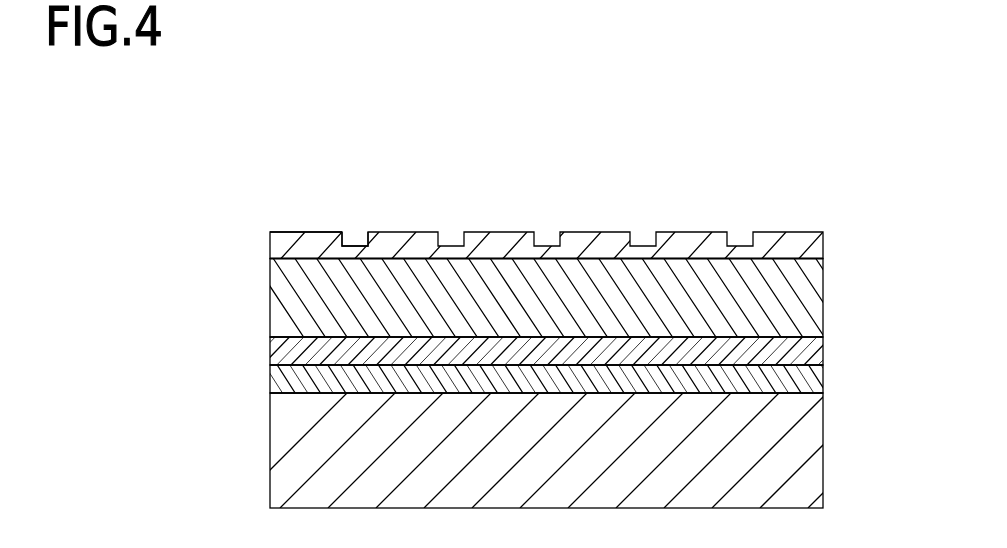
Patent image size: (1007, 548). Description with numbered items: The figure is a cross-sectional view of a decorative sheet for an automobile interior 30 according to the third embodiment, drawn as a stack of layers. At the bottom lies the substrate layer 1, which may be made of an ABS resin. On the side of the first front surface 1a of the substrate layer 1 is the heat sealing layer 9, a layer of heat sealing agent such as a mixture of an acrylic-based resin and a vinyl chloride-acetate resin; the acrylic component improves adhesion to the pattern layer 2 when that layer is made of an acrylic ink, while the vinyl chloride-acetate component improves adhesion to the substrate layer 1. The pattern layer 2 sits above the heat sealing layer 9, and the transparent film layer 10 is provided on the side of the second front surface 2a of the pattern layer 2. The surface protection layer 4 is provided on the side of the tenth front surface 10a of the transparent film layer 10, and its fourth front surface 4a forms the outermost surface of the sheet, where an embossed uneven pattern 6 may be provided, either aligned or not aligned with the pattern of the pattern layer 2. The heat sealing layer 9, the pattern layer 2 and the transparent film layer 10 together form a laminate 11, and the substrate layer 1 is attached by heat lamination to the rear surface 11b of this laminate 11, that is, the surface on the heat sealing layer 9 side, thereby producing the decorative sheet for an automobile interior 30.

The substrate layer 1 is at (826, 449).
The first front surface 1a is at (288, 388).
The pattern layer 2 is at (826, 352).
The second front surface 2a is at (283, 334).
The surface protection layer 4 is at (826, 245).
The fourth front surface 4a is at (290, 234).
The uneven pattern 6 is at (352, 245).
The heat sealing layer 9 is at (826, 385).
The transparent film layer 10 is at (826, 291).
The tenth front surface 10a is at (283, 257).
The laminate 11 is at (906, 264).
The rear surface 11b is at (324, 398).
The decorative sheet for an automobile interior 30 is at (689, 158).